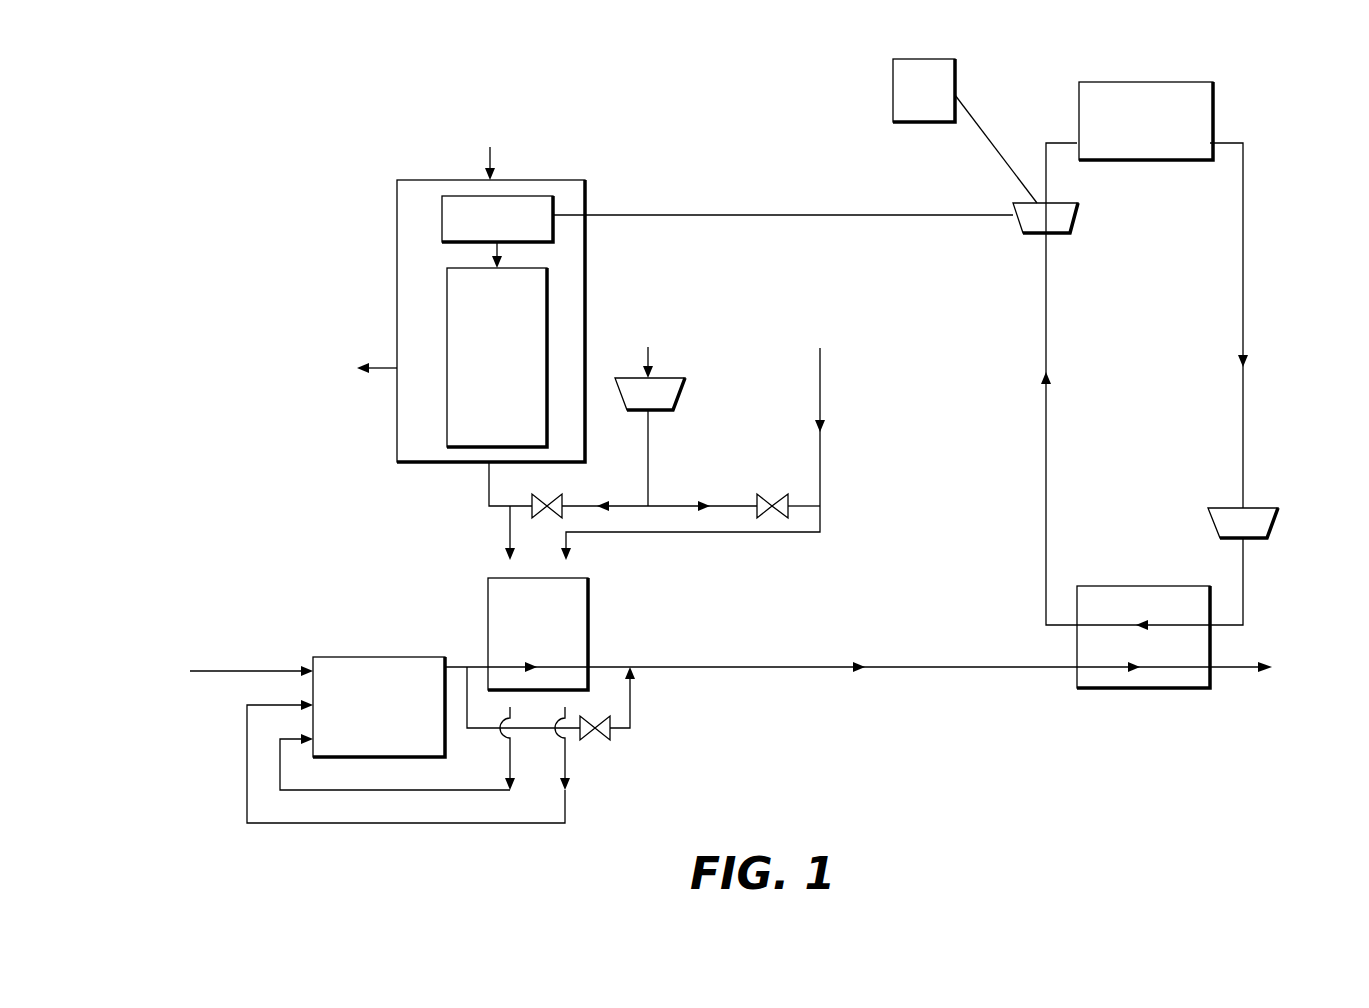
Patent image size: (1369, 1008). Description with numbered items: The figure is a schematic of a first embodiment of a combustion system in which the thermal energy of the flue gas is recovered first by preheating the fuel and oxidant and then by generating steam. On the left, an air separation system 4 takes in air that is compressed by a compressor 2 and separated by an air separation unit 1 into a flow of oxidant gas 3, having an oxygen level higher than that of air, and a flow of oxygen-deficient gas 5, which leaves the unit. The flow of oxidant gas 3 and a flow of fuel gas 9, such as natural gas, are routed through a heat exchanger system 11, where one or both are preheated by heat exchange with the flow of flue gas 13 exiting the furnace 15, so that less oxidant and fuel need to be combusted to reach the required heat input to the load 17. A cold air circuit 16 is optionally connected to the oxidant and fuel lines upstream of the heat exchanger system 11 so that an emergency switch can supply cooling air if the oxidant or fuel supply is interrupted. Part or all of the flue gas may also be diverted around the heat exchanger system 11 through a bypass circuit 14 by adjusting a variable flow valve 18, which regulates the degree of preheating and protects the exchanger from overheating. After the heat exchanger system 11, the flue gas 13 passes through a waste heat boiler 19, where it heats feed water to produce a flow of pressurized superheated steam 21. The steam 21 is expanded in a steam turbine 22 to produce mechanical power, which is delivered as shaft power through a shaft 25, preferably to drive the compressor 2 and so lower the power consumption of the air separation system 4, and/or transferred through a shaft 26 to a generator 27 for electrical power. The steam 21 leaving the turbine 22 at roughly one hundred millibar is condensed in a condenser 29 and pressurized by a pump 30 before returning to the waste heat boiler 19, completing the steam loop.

The air separation unit (ASU) 1 is at (468, 413).
The compressor 2 is at (530, 204).
The flow of oxidant gas 3 is at (478, 498).
The air separation system 4 is at (390, 262).
The flow of oxygen-deficient gas 5 is at (380, 356).
The flow of fuel gas 9 is at (824, 372).
The heat exchanger system 11 is at (572, 614).
The flow of flue gas 13 is at (474, 660).
The bypass circuit 14 is at (642, 698).
The furnace 15 is at (374, 678).
The cold air circuit 16 is at (660, 355).
The load 17 is at (224, 662).
The variable flow valve 18 is at (608, 748).
The waste heat boiler 19 is at (1104, 647).
The superheated steam 21 is at (1040, 441).
The steam turbine 22 is at (1084, 213).
The shaft 25 is at (770, 211).
The shaft 26 is at (998, 142).
The generator 27 is at (906, 78).
The condenser 29 is at (1148, 106).
The pump 30 is at (1286, 517).